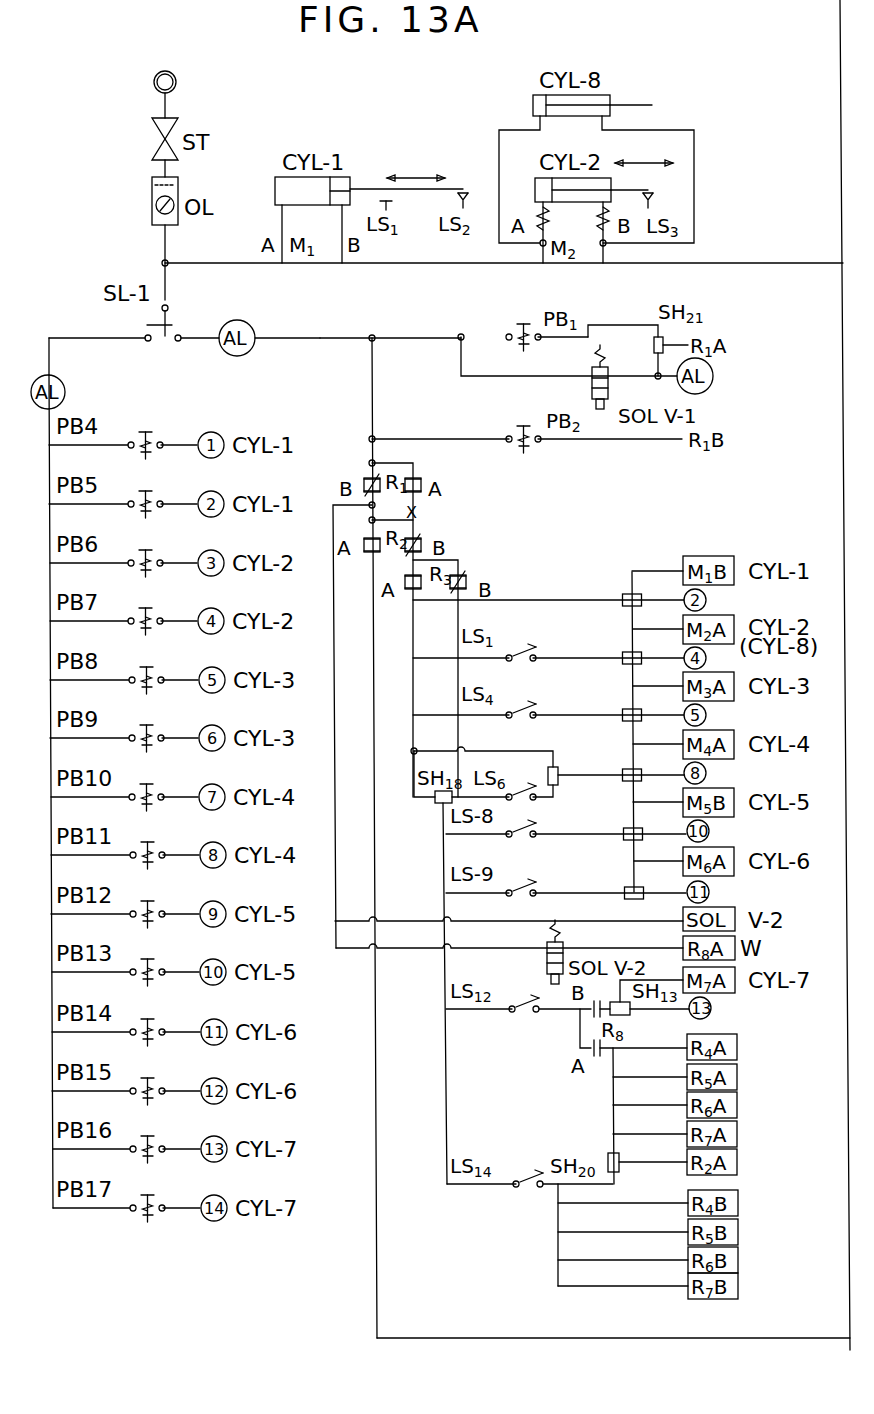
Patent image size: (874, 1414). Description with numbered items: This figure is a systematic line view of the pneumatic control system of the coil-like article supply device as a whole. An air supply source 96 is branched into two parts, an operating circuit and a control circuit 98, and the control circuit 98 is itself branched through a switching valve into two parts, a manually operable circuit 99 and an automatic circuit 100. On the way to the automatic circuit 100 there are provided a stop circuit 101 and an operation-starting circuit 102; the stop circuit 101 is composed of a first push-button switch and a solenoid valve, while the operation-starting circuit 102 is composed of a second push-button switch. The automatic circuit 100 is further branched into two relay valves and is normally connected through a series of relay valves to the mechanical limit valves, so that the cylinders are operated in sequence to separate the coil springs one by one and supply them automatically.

The air supply source 96 is at (176, 82).
The control circuit 98 is at (275, 337).
The manually operable circuit 99 is at (50, 354).
The automatic circuit 100 is at (336, 327).
The stop circuit 101 is at (616, 327).
The operation-starting circuit 102 is at (598, 441).